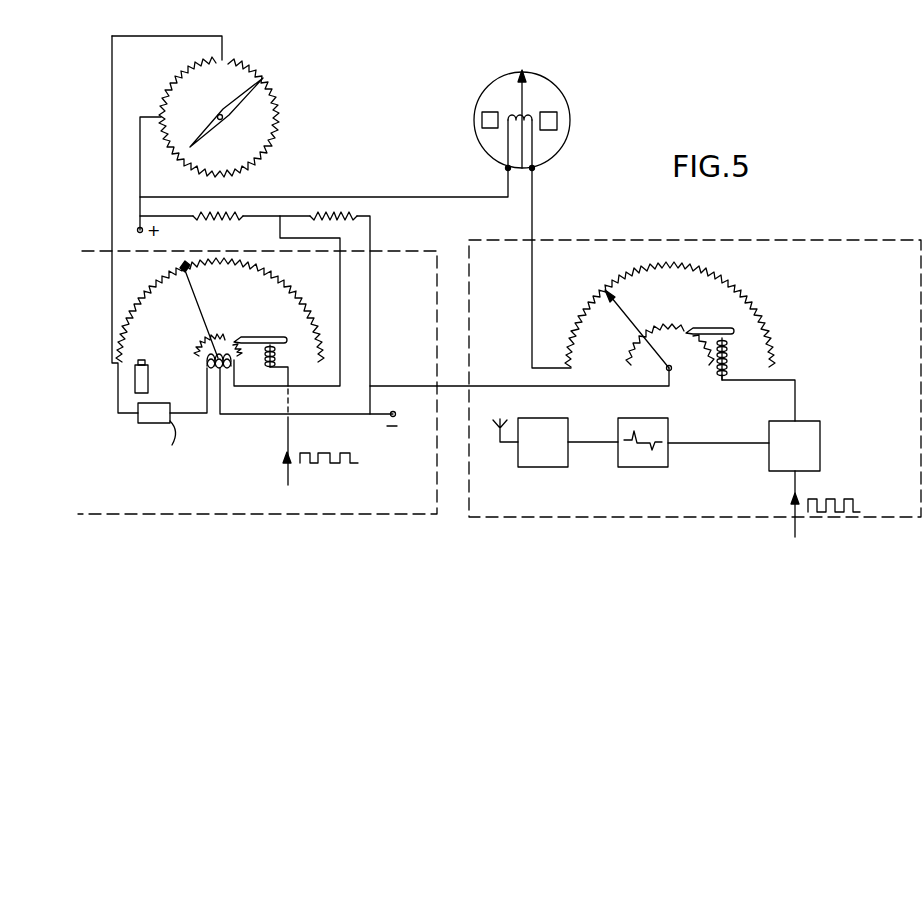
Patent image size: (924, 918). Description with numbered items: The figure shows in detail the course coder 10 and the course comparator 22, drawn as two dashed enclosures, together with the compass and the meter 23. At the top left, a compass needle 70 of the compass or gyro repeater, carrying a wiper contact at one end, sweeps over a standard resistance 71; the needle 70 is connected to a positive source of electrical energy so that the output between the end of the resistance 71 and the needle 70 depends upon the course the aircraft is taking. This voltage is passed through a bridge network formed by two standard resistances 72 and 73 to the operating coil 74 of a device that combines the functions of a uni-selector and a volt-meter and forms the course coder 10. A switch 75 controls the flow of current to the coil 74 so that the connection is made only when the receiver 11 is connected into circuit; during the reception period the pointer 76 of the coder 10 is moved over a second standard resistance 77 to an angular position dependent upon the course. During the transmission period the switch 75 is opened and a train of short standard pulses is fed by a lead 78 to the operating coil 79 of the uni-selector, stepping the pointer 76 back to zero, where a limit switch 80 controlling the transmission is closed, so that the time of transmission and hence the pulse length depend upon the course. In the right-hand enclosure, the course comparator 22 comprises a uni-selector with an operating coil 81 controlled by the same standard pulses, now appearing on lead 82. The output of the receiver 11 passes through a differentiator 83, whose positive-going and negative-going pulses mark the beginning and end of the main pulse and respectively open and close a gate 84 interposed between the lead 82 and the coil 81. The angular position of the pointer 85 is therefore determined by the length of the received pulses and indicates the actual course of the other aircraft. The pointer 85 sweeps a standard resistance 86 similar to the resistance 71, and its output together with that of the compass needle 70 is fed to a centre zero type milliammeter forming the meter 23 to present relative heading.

The course coder 10 is at (415, 517).
The receiver 11 is at (570, 423).
The course comparator 22 is at (637, 517).
The meter 23 is at (571, 117).
The compass needle 70 is at (240, 102).
The standard resistance 71 is at (278, 128).
The standard resistance 72 is at (223, 210).
The standard resistance 73 is at (340, 213).
The operating coil 74 is at (205, 366).
The switch 75 is at (156, 416).
The pointer 76 is at (199, 306).
The second standard resistance 77 is at (291, 291).
The lead 78 is at (290, 433).
The operating coil 79 is at (277, 353).
The limit switch 80 is at (137, 376).
The operating coil 81 is at (728, 355).
The lead 82 is at (792, 485).
The differentiator 83 is at (670, 425).
The gate 84 is at (820, 433).
The pointer 85 is at (628, 317).
The standard resistance 86 is at (752, 300).